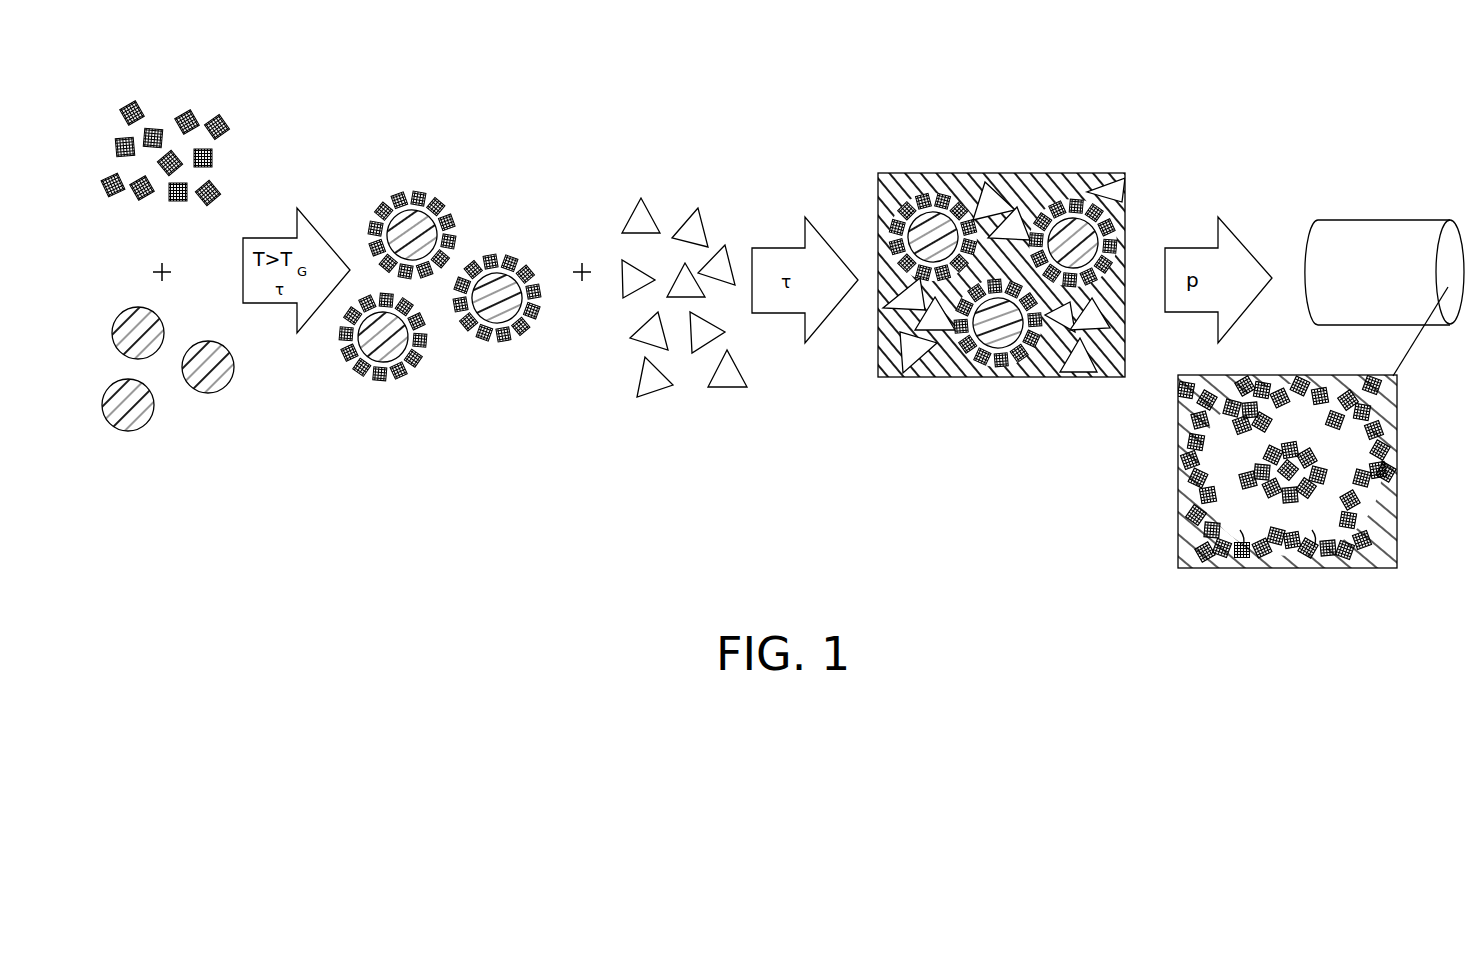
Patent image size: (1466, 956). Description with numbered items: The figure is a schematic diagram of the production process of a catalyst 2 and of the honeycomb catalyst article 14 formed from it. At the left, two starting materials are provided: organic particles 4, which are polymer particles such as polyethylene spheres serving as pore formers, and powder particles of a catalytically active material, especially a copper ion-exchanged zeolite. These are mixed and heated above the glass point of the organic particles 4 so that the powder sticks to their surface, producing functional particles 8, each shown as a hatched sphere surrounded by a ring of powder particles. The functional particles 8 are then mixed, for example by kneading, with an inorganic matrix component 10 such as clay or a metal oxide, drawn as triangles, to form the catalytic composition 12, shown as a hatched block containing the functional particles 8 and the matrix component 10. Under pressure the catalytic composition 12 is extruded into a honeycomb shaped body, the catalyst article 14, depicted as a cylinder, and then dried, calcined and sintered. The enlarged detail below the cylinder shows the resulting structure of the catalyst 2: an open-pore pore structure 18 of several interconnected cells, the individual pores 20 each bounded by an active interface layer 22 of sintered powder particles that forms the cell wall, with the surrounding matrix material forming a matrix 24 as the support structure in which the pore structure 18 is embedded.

The catalyst 2 is at (1282, 496).
The organic particles 4 is at (152, 411).
The functional particles 8 is at (425, 218).
The matrix component 10 is at (656, 392).
The catalytic composition 12 is at (926, 177).
The catalyst article 14 is at (1378, 220).
The pore structure 18 is at (1190, 450).
The pores 20 is at (1243, 546).
The active interface layer 22 is at (1185, 477).
The matrix 24 is at (1392, 405).